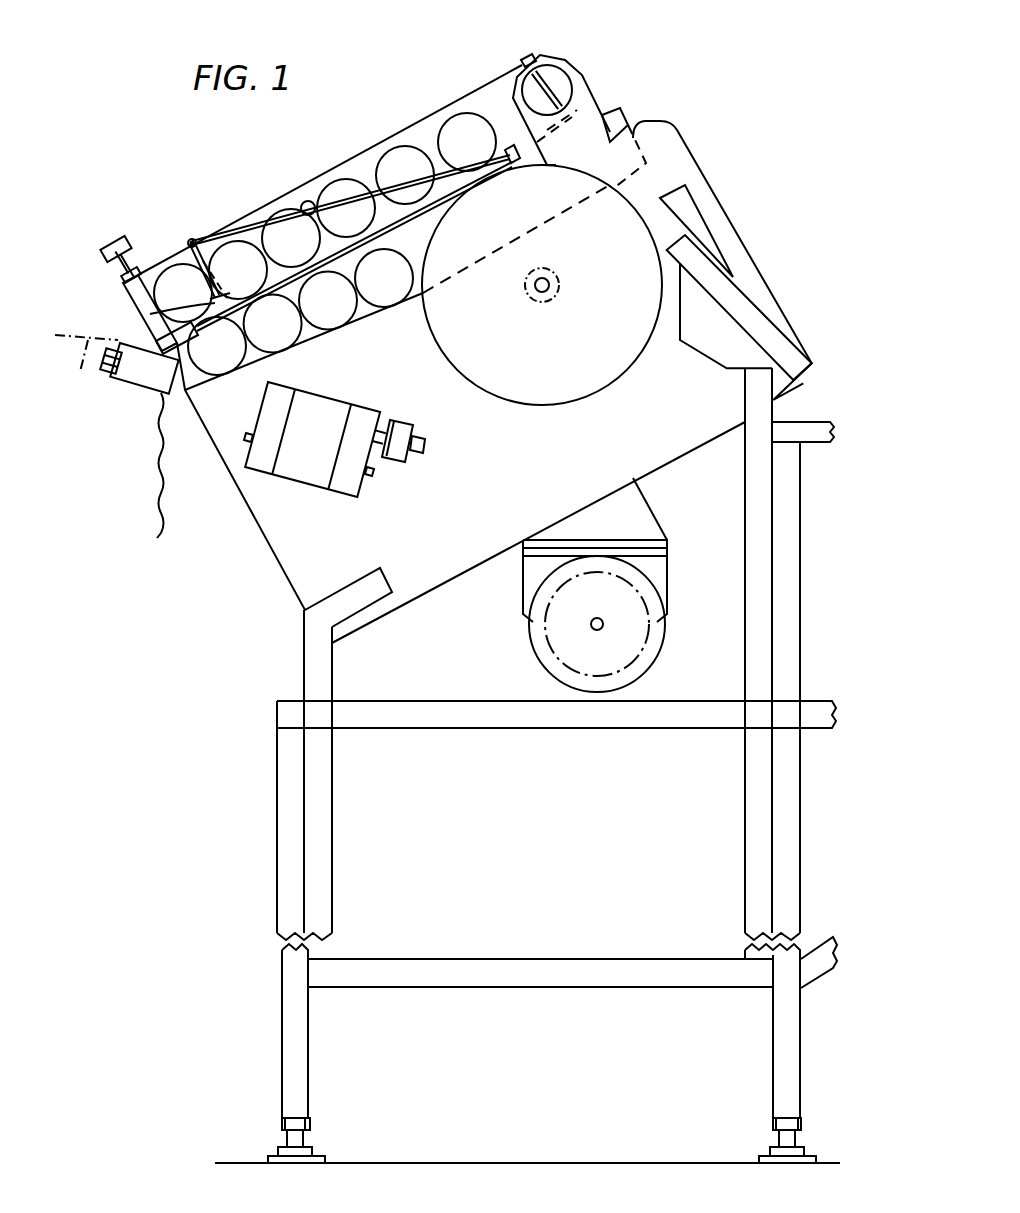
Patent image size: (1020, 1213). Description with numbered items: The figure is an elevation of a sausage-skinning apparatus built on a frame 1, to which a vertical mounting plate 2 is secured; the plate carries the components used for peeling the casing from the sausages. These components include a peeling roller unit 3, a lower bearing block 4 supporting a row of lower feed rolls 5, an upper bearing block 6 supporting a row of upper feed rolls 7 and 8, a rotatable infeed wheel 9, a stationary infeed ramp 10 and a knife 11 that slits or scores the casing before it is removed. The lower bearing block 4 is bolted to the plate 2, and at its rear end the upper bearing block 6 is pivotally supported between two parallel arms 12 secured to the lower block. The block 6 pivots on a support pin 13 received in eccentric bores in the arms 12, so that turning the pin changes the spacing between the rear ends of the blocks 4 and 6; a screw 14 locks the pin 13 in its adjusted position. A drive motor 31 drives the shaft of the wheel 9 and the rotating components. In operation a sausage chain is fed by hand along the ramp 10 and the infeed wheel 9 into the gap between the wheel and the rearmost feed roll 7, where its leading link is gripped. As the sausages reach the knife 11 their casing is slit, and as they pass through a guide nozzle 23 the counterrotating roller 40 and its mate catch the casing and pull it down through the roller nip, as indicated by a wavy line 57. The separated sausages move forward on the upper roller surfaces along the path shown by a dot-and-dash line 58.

The frame 1 is at (342, 866).
The vertical mounting plate 2 is at (291, 567).
The peeling roller unit 3 is at (355, 401).
The lower bearing block 4 is at (390, 302).
The lower feed rolls 5 is at (287, 345).
The upper bearing block 6 is at (357, 153).
The upper feed rolls 7 is at (403, 146).
The upper feed rolls 8 is at (176, 272).
The rotatable infeed wheel 9 is at (621, 357).
The stationary infeed ramp 10 is at (768, 330).
The knife 11 is at (150, 314).
The parallel arms 12 is at (580, 122).
The support pin 13 is at (562, 83).
The screw 14 is at (528, 55).
The guide nozzle 23 is at (138, 332).
The drive motor 31 is at (638, 622).
The counterrotating roller 40 is at (127, 373).
The wavy line 57 is at (158, 468).
The dot-and-dash line 58 is at (104, 373).